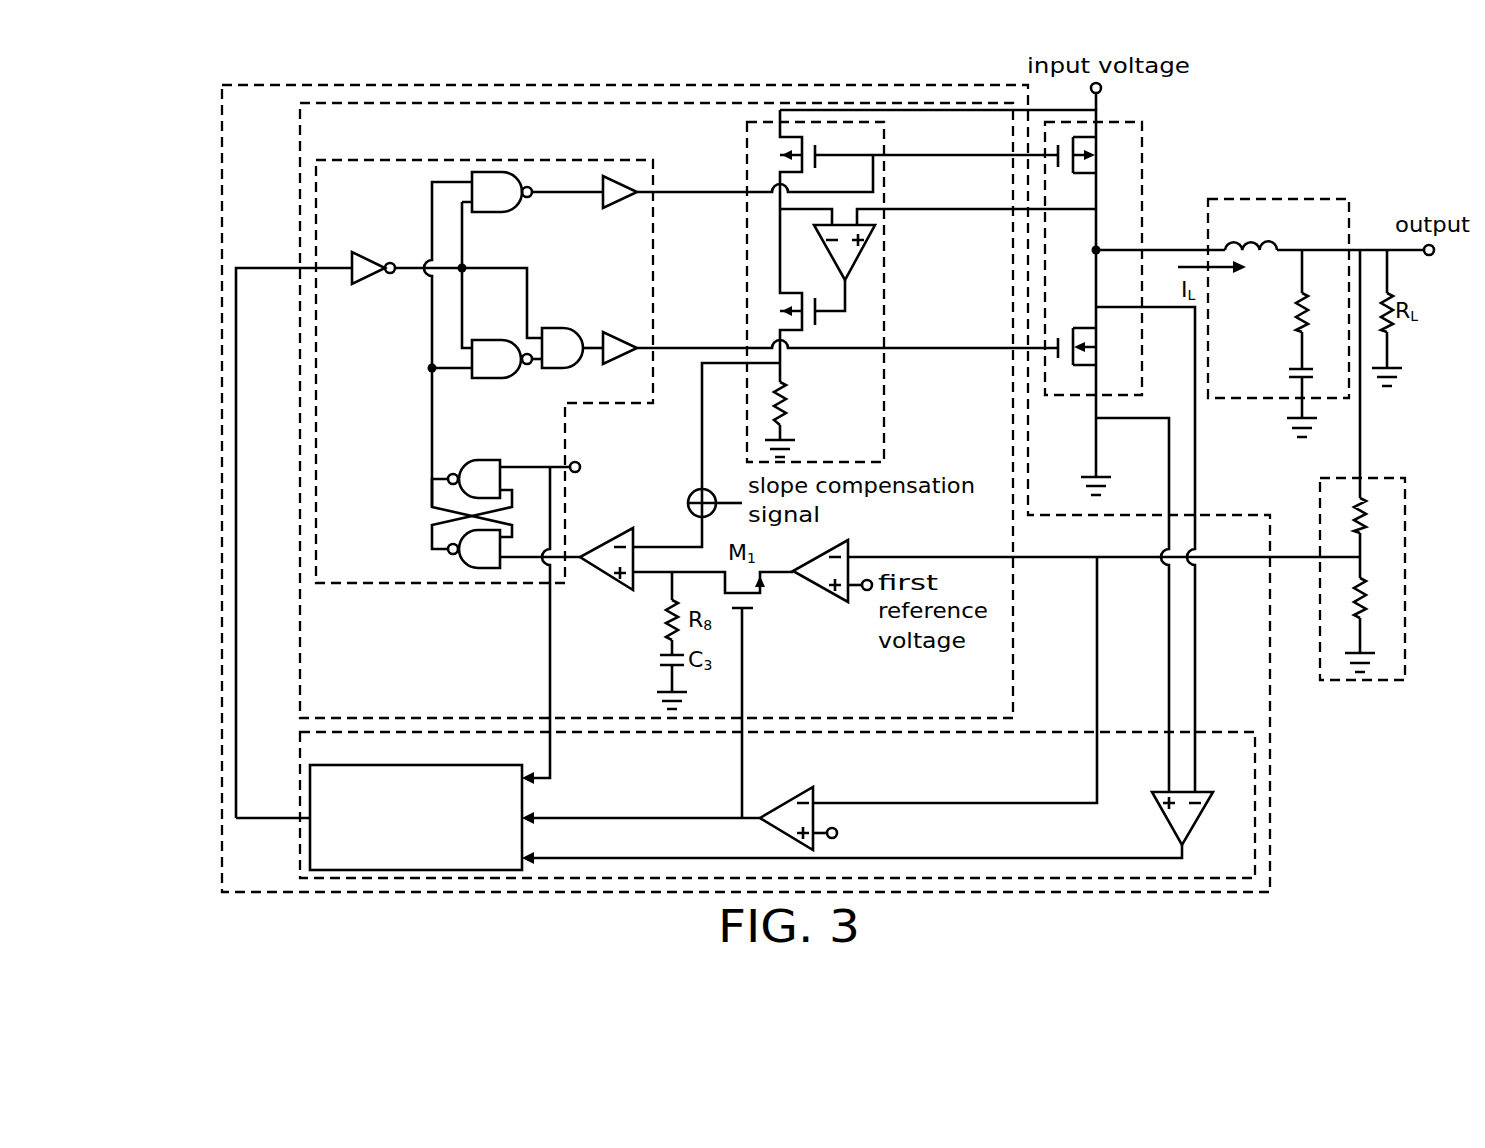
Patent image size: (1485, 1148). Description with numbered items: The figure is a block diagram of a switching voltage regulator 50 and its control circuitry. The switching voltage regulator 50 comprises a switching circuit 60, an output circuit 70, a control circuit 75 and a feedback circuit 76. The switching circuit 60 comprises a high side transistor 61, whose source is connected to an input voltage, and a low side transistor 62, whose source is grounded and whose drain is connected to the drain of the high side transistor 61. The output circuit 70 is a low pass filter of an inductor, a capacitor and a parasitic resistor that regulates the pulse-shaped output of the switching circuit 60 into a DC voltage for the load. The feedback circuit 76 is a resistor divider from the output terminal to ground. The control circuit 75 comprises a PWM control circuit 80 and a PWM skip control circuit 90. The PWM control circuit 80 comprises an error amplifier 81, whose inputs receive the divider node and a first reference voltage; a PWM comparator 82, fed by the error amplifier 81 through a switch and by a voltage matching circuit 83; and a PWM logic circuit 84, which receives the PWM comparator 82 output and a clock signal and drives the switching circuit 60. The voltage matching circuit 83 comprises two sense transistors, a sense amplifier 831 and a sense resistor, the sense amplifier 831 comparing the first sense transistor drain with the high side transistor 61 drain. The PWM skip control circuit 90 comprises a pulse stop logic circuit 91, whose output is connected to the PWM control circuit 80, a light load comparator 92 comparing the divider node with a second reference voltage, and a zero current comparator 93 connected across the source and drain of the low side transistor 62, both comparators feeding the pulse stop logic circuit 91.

The switching voltage regulator 50 is at (186, 138).
The switching circuit 60 is at (1143, 135).
The high side transistor 61 is at (1093, 155).
The low side transistor 62 is at (1092, 346).
The output circuit 70 is at (1279, 197).
The control circuit 75 is at (222, 483).
The feedback circuit 76 is at (1362, 683).
The PWM control circuit 80 is at (300, 160).
The error amplifier 81 is at (820, 580).
The PWM comparator 82 is at (566, 550).
The voltage matching circuit 83 is at (747, 292).
The sense amplifier 831 is at (834, 252).
The PWM logic circuit 84 is at (653, 240).
The PWM skip control circuit 90 is at (1222, 731).
The pulse stop logic circuit 91 is at (522, 798).
The light load comparator 92 is at (786, 810).
The zero current comparator 93 is at (1191, 819).